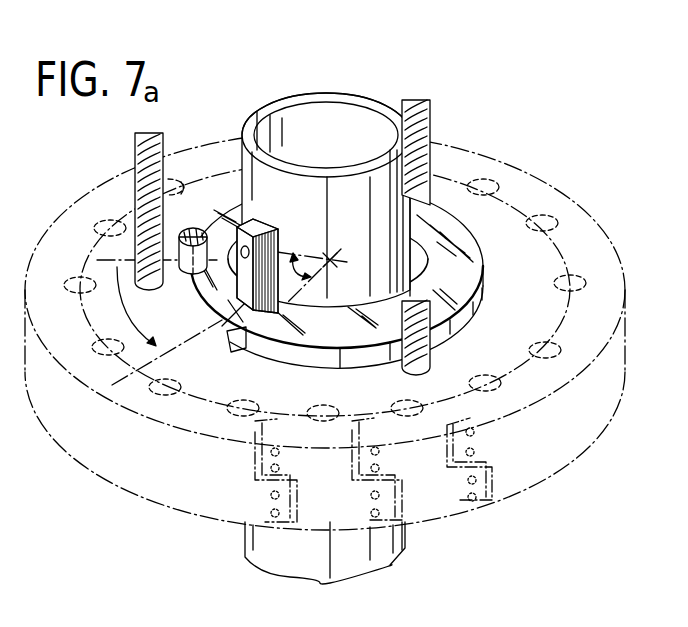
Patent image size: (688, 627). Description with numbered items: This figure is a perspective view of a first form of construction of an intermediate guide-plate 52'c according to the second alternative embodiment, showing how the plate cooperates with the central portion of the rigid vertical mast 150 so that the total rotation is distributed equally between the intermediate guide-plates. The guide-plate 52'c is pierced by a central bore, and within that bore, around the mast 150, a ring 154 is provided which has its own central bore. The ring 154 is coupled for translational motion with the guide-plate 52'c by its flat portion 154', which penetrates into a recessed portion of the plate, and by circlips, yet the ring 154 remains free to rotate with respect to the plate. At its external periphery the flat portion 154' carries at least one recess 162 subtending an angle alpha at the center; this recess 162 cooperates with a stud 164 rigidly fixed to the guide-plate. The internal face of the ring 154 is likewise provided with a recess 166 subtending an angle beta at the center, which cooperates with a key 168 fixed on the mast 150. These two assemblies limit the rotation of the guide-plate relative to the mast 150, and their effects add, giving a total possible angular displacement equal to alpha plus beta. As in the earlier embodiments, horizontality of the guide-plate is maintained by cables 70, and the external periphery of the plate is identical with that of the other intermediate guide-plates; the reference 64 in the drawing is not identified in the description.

The rigid vertical mast 150 is at (340, 94).
The key 168 is at (253, 221).
The ring 154 is at (350, 228).
The intermediate guide-plate 52'c is at (325, 331).
The flat portion 154' is at (388, 317).
The cables 70 is at (136, 155).
The recess 166 is at (233, 240).
The stud 164 is at (187, 268).
The recess 162 is at (240, 342).
The clamp segments 64 is at (350, 526).